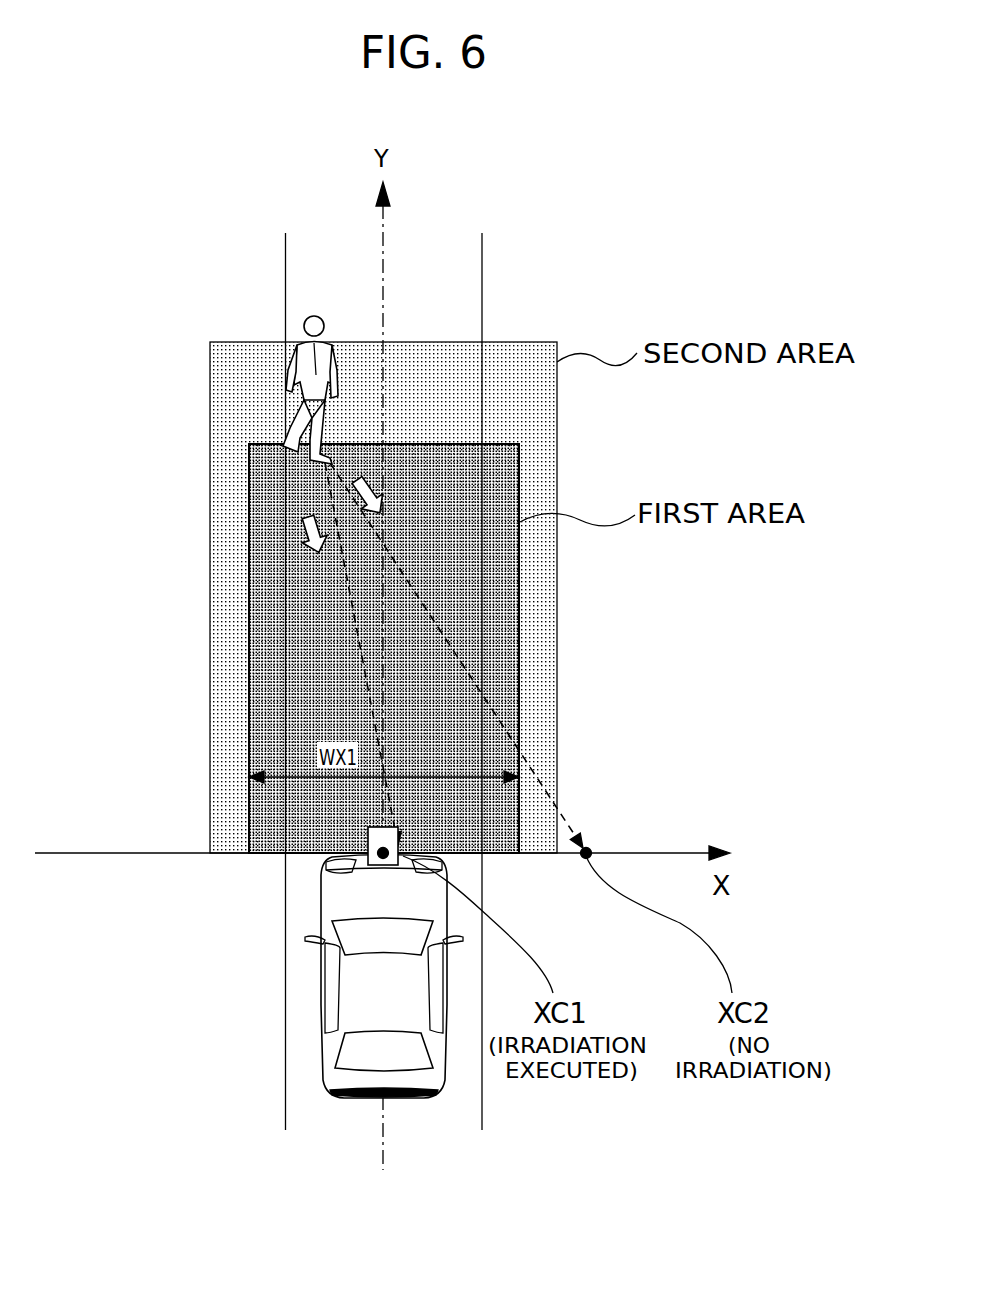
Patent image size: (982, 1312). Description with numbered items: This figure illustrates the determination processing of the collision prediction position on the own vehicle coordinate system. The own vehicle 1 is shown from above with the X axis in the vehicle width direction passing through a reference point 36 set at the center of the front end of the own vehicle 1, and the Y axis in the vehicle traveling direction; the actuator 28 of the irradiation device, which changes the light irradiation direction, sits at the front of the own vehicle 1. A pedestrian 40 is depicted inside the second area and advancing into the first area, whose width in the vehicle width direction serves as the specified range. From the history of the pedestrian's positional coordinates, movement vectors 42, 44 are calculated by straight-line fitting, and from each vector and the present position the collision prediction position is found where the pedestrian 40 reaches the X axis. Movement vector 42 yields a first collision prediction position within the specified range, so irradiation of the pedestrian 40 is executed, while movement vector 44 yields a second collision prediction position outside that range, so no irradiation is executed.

The own vehicle 1 is at (323, 1032).
The actuator 28 is at (367, 843).
The reference point 36 is at (378, 857).
The pedestrian 40 is at (290, 368).
The movement vector 42 is at (307, 528).
The movement vector 44 is at (367, 489).